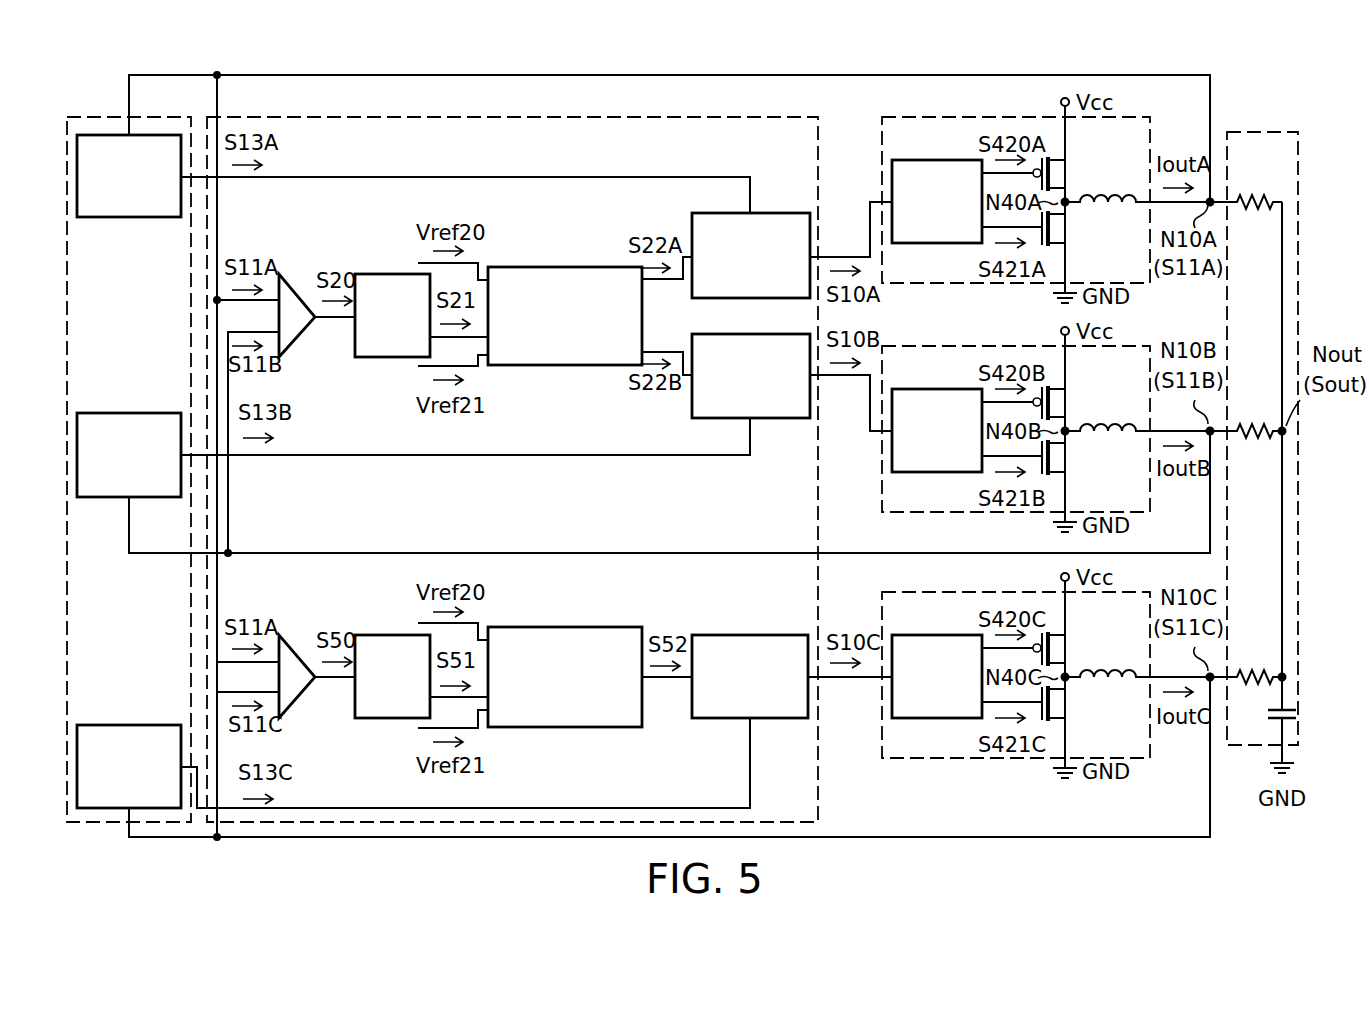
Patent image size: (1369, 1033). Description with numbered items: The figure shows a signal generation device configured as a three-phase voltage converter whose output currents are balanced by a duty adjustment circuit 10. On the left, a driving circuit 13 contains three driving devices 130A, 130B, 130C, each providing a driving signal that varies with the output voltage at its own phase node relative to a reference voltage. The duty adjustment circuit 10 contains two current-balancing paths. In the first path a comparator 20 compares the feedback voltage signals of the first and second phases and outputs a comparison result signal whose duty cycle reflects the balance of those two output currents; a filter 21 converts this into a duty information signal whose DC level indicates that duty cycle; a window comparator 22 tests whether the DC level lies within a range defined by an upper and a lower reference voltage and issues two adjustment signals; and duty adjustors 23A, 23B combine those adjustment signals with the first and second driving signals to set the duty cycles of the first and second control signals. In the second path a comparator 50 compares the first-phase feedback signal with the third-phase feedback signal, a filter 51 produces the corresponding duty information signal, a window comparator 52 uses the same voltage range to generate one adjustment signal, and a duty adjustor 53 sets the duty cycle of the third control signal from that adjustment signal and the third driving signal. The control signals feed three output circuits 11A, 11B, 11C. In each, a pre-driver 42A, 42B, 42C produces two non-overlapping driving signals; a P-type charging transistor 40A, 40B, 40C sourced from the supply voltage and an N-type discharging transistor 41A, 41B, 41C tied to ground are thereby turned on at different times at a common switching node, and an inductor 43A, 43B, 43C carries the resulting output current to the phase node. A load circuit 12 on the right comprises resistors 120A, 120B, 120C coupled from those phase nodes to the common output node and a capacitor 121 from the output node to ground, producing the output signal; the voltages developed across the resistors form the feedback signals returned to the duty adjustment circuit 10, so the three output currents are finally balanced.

The duty adjustment circuit 10 is at (516, 117).
The output circuit 11A is at (882, 117).
The output circuit 11B is at (882, 346).
The output circuit 11C is at (882, 592).
The load circuit 12 is at (1259, 130).
The driving circuit 13 is at (70, 116).
The comparator 20 is at (297, 292).
The filter 21 is at (357, 274).
The window comparator 22 is at (563, 267).
The duty adjustor 23A is at (692, 213).
The duty adjustor 23B is at (692, 334).
The comparator 50 is at (297, 652).
The filter 51 is at (357, 635).
The window comparator 52 is at (563, 627).
The duty adjustor 53 is at (692, 635).
The charging transistor 40A is at (1058, 177).
The charging transistor 40B is at (1058, 406).
The charging transistor 40C is at (1058, 652).
The discharging transistor 41A is at (1058, 234).
The discharging transistor 41B is at (1058, 463).
The discharging transistor 41C is at (1058, 709).
The pre-driver 42A is at (892, 159).
The pre-driver 42B is at (892, 388).
The pre-driver 42C is at (892, 634).
The inductor 43A is at (1106, 195).
The inductor 43B is at (1106, 424).
The inductor 43C is at (1106, 670).
The resistor 120A is at (1256, 198).
The resistor 120B is at (1256, 427).
The resistor 120C is at (1256, 673).
The capacitor 121 is at (1296, 714).
The driving device 130A is at (78, 217).
The driving device 130B is at (78, 414).
The driving device 130C is at (78, 726).